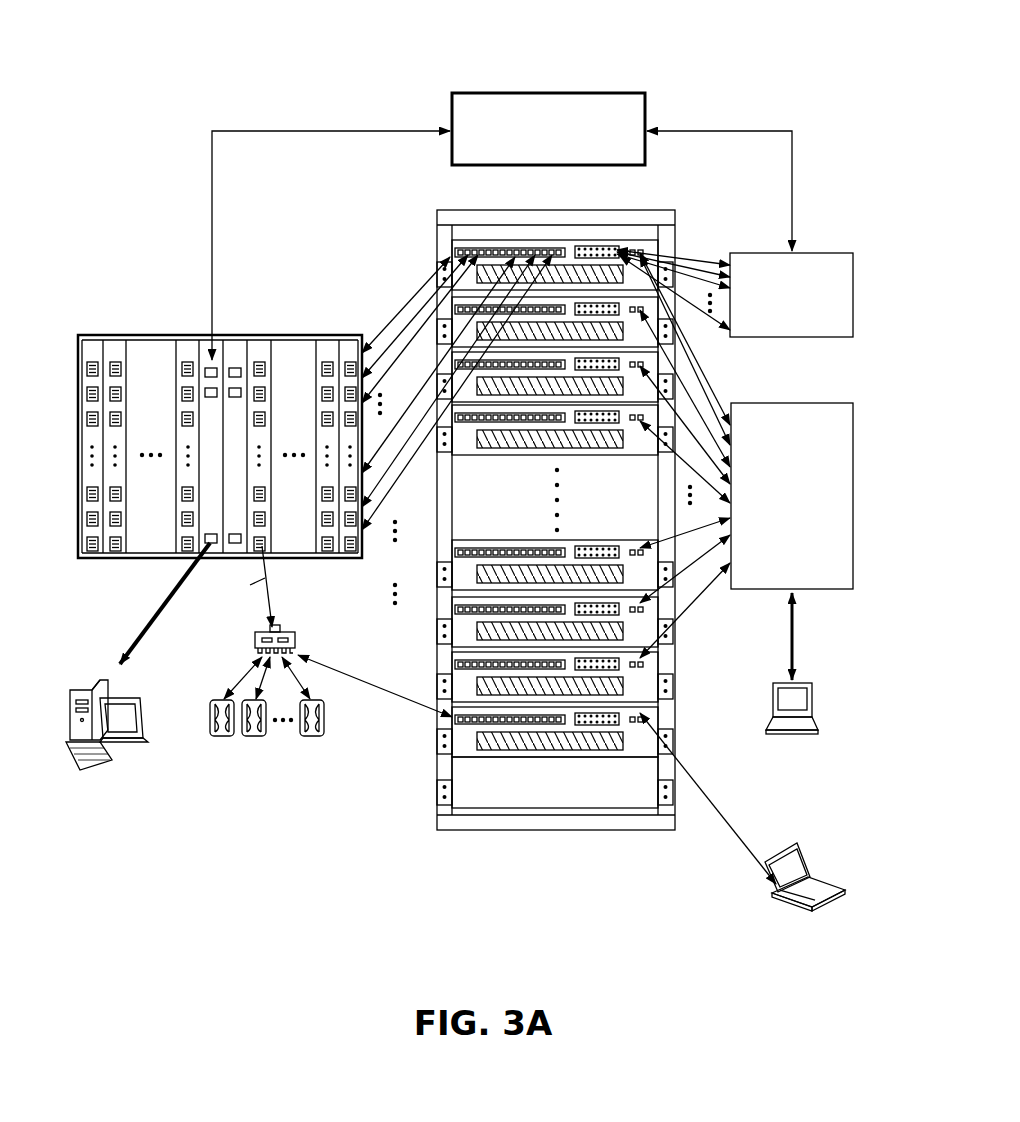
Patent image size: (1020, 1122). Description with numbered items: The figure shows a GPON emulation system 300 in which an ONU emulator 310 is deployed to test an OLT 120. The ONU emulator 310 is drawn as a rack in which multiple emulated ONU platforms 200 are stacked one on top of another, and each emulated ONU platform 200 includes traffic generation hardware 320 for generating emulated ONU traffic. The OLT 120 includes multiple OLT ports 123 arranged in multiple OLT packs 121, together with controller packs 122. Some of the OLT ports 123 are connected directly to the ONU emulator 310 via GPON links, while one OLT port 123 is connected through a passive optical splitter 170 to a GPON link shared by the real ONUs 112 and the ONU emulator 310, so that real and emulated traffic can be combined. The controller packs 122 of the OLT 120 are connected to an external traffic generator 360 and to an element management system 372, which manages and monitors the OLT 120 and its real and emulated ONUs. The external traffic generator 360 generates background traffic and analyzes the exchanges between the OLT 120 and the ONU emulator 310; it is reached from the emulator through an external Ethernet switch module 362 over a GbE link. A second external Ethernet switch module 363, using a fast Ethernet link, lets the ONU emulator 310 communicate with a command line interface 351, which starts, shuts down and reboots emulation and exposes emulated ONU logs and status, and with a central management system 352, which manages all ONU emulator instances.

The GPON emulation system 300 is at (758, 68).
The external traffic generator 360 is at (640, 93).
The ONU emulator 310 is at (553, 550).
The traffic generation hardware 320 is at (539, 587).
The emulated ONU platform 200 is at (467, 735).
The external Ethernet switch module 362 is at (791, 295).
The external Ethernet switch module 363 is at (792, 496).
The central management system 352 is at (785, 735).
The command line interface (CLI) 351 is at (742, 838).
The element management system (EMS) 372 is at (134, 699).
The passive optical splitter 170 is at (303, 633).
The real ONUs 112 is at (267, 723).
The OLT 120 is at (204, 451).
The OLT pack 121 is at (81, 451).
The controller pack 122 is at (236, 343).
The OLT port 123 is at (88, 368).